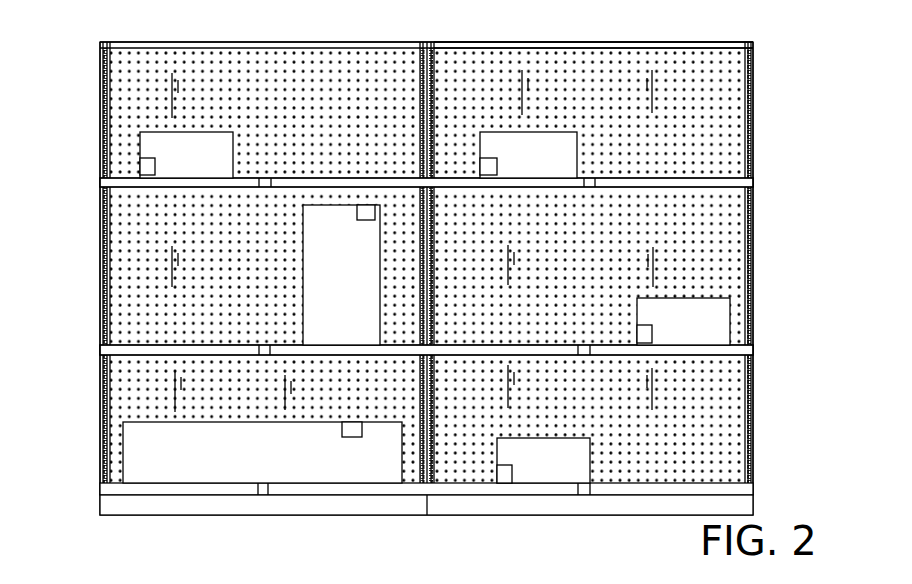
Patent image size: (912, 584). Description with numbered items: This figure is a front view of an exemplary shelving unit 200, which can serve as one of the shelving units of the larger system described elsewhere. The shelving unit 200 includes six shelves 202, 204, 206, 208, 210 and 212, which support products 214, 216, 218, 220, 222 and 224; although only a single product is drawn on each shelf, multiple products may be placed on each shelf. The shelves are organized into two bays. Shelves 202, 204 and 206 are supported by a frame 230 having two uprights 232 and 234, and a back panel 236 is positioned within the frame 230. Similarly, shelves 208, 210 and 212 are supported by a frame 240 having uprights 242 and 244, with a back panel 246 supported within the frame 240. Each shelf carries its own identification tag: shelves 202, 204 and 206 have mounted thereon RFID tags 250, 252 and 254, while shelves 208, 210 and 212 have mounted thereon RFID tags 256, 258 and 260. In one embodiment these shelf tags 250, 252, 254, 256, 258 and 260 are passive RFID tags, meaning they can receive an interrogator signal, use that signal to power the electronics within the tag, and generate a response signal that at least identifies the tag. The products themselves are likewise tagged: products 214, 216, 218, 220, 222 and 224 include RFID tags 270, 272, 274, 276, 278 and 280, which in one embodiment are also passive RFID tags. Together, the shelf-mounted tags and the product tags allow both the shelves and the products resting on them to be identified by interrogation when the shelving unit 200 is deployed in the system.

The shelving unit 200 is at (158, 544).
The shelf 202 is at (170, 498).
The shelf 204 is at (100, 350).
The shelf 206 is at (100, 185).
The shelf 208 is at (753, 490).
The shelf 210 is at (753, 350).
The shelf 212 is at (753, 182).
The product 214 is at (262, 452).
The product 216 is at (341, 275).
The product 218 is at (186, 155).
The product 220 is at (543, 460).
The product 222 is at (683, 321).
The product 224 is at (528, 155).
The frame 230 is at (140, 43).
The upright 232 is at (100, 43).
The upright 234 is at (420, 43).
The back panel 236 is at (200, 63).
The frame 240 is at (655, 43).
The upright 242 is at (433, 48).
The upright 244 is at (753, 46).
The back panel 246 is at (520, 63).
The RFID tag 250 is at (262, 495).
The RFID tag 252 is at (265, 345).
The RFID tag 254 is at (262, 188).
The RFID tag 256 is at (592, 500).
The RFID tag 258 is at (583, 352).
The RFID tag 260 is at (588, 186).
The RFID tag 270 is at (352, 427).
The RFID tag 272 is at (365, 214).
The RFID tag 274 is at (140, 165).
The RFID tag 276 is at (500, 472).
The RFID tag 278 is at (640, 330).
The RFID tag 280 is at (490, 158).